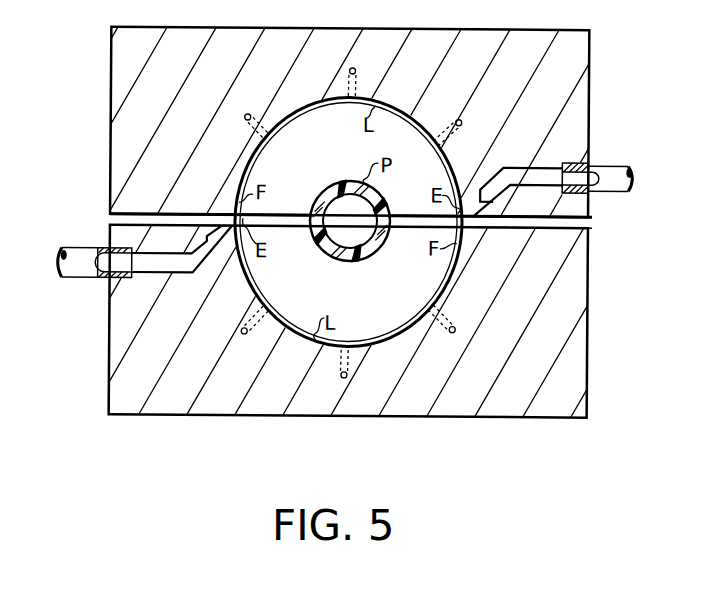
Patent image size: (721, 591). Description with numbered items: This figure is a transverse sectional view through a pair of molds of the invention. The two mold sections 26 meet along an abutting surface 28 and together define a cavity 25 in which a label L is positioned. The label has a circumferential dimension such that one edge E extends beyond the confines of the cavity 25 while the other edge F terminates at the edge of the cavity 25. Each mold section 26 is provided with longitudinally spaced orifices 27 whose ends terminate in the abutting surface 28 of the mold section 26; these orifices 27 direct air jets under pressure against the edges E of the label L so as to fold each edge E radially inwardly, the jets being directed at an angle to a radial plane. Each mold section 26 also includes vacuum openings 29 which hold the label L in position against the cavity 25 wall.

The cavity 25 is at (402, 108).
The mold section 26 is at (110, 130).
The orifices 27 is at (478, 202).
The abutting surface 28 is at (592, 219).
The vacuum openings 29 is at (349, 70).